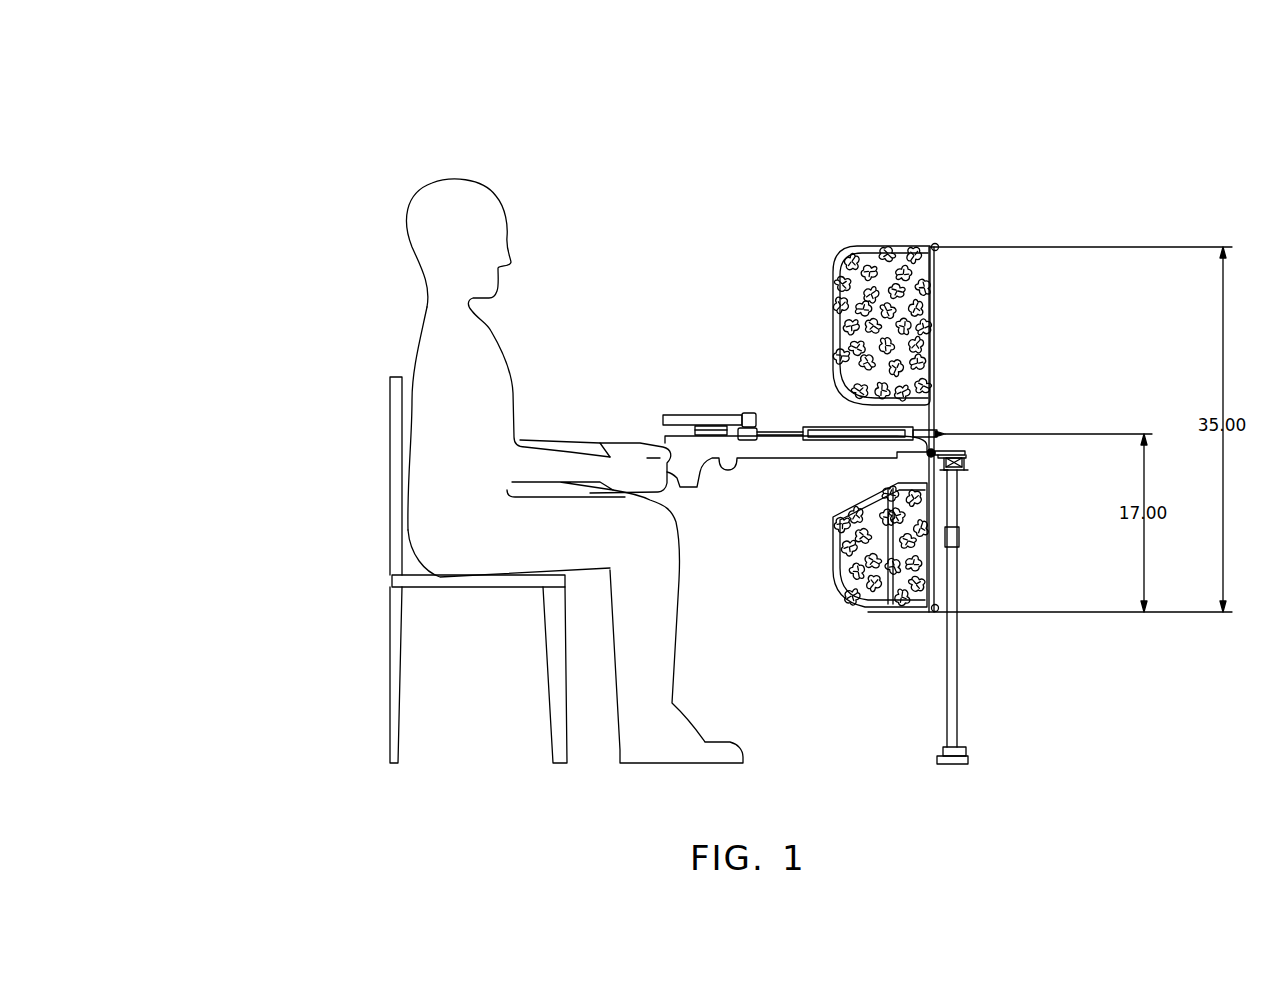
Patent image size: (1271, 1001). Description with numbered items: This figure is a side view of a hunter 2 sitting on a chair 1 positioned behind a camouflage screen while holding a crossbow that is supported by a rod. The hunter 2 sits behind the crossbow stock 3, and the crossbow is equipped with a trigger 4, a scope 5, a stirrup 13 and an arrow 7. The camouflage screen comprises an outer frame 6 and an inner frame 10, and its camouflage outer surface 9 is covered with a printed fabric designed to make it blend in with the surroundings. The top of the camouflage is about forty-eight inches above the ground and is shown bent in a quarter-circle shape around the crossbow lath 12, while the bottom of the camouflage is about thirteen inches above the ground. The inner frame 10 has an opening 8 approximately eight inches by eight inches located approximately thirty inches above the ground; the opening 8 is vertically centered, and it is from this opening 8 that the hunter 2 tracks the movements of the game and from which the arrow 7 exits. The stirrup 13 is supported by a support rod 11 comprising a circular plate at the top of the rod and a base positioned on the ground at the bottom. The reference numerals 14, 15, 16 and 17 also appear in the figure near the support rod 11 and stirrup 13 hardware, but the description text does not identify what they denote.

The chair 1 is at (390, 397).
The hunter 2 is at (432, 183).
The crossbow stock 3 is at (610, 440).
The trigger 4 is at (737, 463).
The scope 5 is at (710, 413).
The outer frame 6 is at (902, 247).
The arrow 7 is at (940, 446).
The opening 8 is at (935, 404).
The camouflage outer surface 9 is at (950, 478).
The inner frame 10 is at (932, 280).
The support rod 11 is at (952, 460).
The crossbow lath 12 is at (932, 368).
The stirrup 13 is at (962, 458).
The bolt 14 is at (950, 467).
The nut 15 is at (950, 471).
The fastener 16 is at (956, 452).
The pin 17 is at (952, 464).